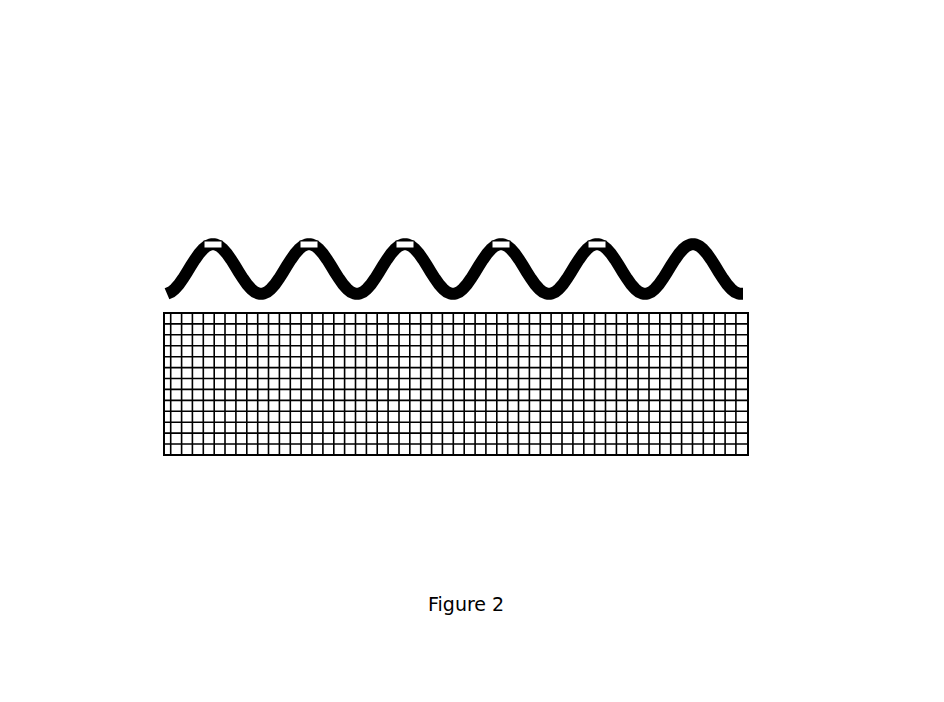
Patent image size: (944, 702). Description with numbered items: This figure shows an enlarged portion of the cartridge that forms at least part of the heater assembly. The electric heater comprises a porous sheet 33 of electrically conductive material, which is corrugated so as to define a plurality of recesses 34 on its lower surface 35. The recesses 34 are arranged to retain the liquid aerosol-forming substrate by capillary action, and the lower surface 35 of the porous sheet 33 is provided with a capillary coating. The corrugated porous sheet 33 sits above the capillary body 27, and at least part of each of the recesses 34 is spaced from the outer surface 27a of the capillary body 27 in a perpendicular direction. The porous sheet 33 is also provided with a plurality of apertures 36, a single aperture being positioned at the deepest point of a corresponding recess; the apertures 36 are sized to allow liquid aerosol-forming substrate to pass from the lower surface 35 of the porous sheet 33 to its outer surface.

The capillary body 27 is at (443, 458).
The outer surface of the capillary body 27a is at (695, 313).
The porous sheet 33 is at (152, 273).
The recesses 34 is at (212, 275).
The lower surface 35 is at (190, 276).
The apertures 36 is at (206, 236).